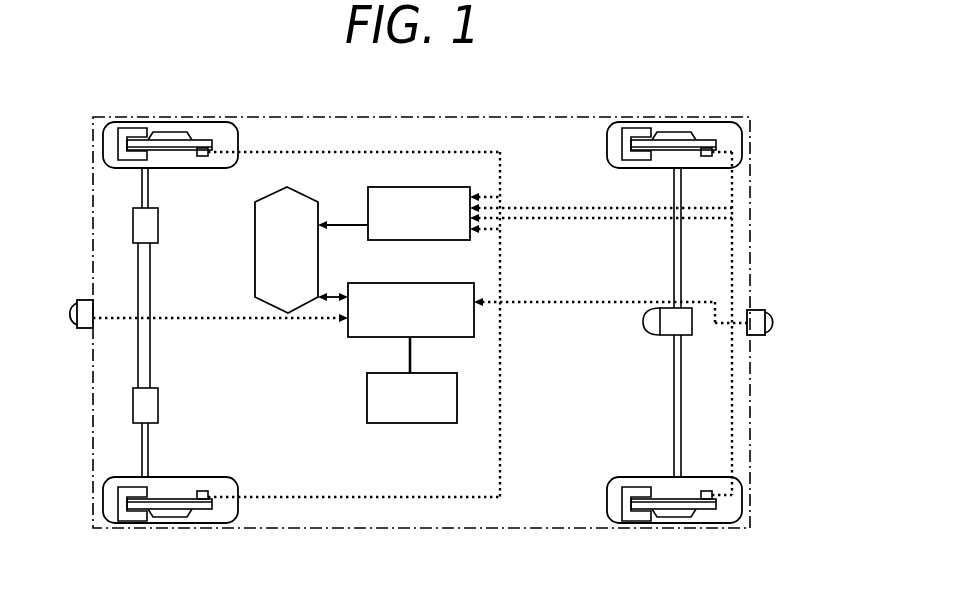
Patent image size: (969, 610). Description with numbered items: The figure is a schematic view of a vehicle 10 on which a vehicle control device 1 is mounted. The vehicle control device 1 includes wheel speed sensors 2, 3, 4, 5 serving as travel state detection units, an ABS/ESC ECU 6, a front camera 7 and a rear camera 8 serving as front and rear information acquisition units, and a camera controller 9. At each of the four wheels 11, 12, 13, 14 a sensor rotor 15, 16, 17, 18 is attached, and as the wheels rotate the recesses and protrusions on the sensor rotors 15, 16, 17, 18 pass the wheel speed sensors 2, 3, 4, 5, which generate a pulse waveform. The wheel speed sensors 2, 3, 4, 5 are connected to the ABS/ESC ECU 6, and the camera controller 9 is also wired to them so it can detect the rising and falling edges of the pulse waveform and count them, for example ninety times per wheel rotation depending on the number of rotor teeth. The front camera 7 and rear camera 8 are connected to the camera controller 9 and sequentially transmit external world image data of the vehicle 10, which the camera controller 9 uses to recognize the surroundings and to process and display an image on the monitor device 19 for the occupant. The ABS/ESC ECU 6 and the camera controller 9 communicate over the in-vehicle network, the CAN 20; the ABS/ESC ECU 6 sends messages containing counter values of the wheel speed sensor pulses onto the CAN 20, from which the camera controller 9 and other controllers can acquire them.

The vehicle control device 1 is at (689, 108).
The wheel speed sensor 2 is at (216, 135).
The wheel speed sensor 3 is at (216, 511).
The wheel speed sensor 4 is at (720, 135).
The wheel speed sensor 5 is at (720, 511).
The ABS/ESC ECU 6 is at (368, 197).
The front camera 7 is at (77, 302).
The rear camera 8 is at (765, 310).
The camera controller 9 is at (362, 282).
The vehicle 10 is at (437, 256).
The wheel 11 is at (110, 133).
The wheel 12 is at (110, 512).
The wheel 13 is at (614, 133).
The wheel 14 is at (614, 512).
The sensor rotor 15 is at (185, 143).
The sensor rotor 16 is at (185, 507).
The sensor rotor 17 is at (689, 143).
The sensor rotor 18 is at (689, 507).
The monitor device 19 is at (367, 398).
The in-vehicle network (CAN) 20 is at (255, 228).